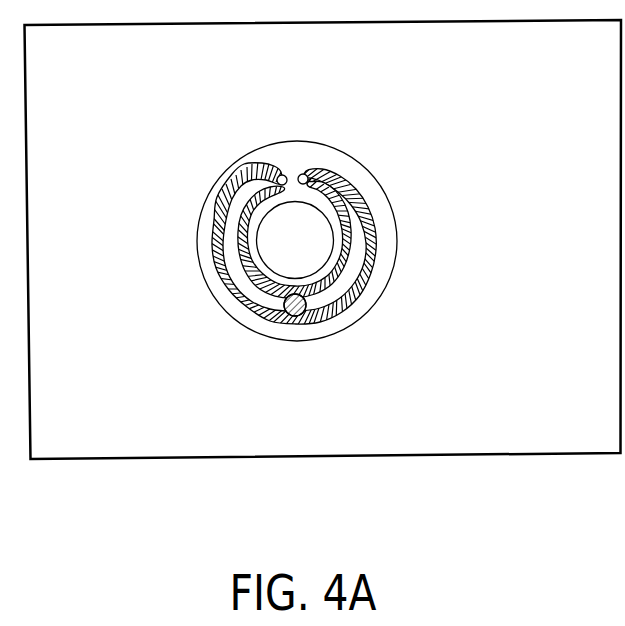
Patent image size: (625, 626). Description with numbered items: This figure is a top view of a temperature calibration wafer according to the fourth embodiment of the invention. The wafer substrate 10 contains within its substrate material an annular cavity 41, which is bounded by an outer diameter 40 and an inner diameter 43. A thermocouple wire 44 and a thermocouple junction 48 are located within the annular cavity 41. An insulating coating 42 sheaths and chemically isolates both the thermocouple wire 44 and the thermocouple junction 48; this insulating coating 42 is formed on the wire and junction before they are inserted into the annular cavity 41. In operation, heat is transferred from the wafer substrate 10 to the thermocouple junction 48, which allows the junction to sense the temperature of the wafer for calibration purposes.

The wafer substrate 10 is at (323, 239).
The outer diameter 40 is at (380, 180).
The annular cavity 41 is at (281, 144).
The insulating coating 42 is at (377, 231).
The inner diameter 43 is at (295, 201).
The thermocouple wire 44 is at (307, 175).
The thermocouple junction 48 is at (288, 305).